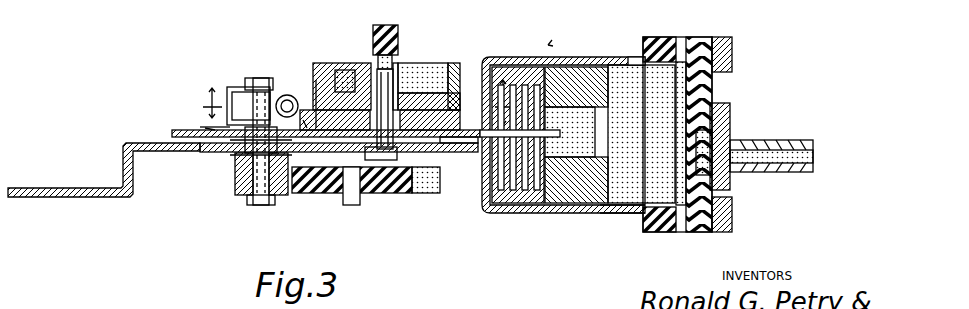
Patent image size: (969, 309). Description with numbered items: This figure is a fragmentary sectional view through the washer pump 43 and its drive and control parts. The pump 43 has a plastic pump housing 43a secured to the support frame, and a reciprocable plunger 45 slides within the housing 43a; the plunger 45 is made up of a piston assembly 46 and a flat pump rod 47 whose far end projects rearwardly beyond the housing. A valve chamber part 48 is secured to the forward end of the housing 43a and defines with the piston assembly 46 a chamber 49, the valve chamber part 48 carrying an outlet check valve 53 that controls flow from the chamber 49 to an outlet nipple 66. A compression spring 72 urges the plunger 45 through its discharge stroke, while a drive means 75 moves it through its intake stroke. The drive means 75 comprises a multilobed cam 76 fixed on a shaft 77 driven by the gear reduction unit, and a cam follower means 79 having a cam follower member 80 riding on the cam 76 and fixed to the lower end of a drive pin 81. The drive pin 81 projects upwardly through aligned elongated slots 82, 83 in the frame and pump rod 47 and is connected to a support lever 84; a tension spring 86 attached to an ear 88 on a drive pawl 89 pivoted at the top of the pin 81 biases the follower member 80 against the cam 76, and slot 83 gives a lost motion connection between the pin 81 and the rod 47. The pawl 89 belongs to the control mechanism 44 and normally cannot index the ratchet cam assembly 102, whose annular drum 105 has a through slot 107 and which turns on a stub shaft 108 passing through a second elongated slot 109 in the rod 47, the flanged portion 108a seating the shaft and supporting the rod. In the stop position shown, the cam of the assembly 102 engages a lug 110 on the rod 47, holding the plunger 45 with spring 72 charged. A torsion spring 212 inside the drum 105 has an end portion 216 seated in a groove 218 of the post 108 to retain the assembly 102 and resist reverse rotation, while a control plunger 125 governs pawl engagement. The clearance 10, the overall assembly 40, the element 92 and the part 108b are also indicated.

The clearance gap 10 is at (490, 95).
The solenoid valve assembly 40 is at (548, 45).
The washer pump 43 is at (663, 37).
The pump housing 43a is at (626, 60).
The control mechanism 44 is at (85, 187).
The plunger 45 is at (613, 130).
The piston assembly 46 is at (578, 58).
The pump rod 47 is at (172, 133).
The valve chamber part 48 is at (712, 37).
The chamber 49 is at (638, 183).
The outlet check valve 53 is at (724, 143).
The hose nipple 66 is at (798, 142).
The compression spring 72 is at (530, 64).
The drive means 75 is at (310, 198).
The multilobed cam 76 is at (437, 180).
The shaft 77 is at (353, 198).
The cam follower means 79 is at (261, 85).
The cam follower member 80 is at (235, 187).
The drive pin 81 is at (255, 110).
The elongated slot 82 is at (200, 147).
The elongated slot 83 is at (207, 129).
The support lever 84 is at (238, 152).
The tension spring 86 is at (261, 140).
The ear 88 is at (305, 125).
The drive pawl 89 is at (287, 95).
The lever arm 92 is at (205, 128).
The ratchet cam assembly 102 is at (428, 62).
The annular drum 105 is at (452, 92).
The through slot 107 is at (404, 72).
The stub shaft 108 is at (420, 112).
The flanged portion 108a is at (412, 160).
The plunger 108b is at (500, 70).
The elongated slot 109 is at (435, 152).
The lug 110 is at (316, 80).
The plunger 125 is at (392, 25).
The torsion spring 212 is at (345, 63).
The end portion 216 is at (372, 36).
The groove 218 is at (423, 78).